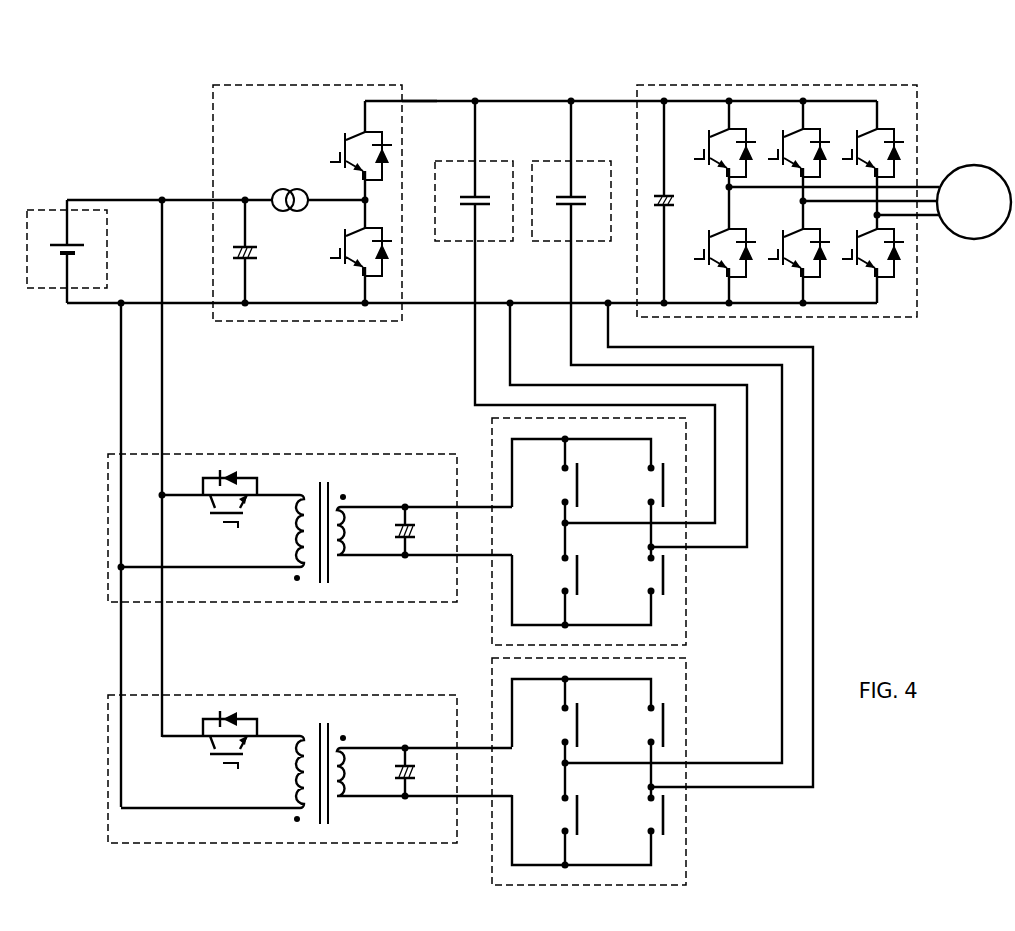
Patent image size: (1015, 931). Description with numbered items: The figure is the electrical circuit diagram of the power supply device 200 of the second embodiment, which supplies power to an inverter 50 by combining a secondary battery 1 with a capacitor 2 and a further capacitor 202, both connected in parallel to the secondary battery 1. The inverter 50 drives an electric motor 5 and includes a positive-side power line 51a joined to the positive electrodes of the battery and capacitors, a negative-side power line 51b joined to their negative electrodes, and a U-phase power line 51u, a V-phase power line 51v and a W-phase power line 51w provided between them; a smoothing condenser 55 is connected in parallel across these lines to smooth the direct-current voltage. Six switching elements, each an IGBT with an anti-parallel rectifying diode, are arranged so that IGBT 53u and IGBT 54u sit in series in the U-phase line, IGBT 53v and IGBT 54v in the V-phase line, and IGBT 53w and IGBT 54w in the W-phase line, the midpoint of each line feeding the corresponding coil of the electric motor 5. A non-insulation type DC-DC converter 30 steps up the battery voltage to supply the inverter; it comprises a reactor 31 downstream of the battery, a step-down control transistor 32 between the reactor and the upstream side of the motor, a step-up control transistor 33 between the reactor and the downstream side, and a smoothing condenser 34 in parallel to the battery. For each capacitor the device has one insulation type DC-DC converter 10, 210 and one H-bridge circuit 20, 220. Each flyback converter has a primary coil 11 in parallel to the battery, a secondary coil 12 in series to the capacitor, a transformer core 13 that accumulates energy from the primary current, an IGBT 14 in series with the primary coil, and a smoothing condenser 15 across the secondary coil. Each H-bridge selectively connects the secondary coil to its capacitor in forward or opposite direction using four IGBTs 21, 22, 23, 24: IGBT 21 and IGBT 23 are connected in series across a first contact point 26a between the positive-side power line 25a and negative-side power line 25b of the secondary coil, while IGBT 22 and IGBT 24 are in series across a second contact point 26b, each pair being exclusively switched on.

The secondary battery 1 is at (50, 208).
The capacitor 2 is at (497, 158).
The capacitor 202 is at (597, 158).
The power supply device 200 is at (608, 84).
The electric motor 5 is at (968, 165).
The insulation type DC-DC converter 10 is at (428, 451).
The insulation type DC-DC converter 210 is at (432, 692).
The primary coil 11 is at (305, 492).
The secondary coil 12 is at (352, 506).
The transformer core 13 is at (332, 573).
The IGBT 14 is at (212, 506).
The smoothing condenser 15 is at (404, 518).
The H-bridge circuit 20 is at (688, 625).
The H-bridge circuit 220 is at (688, 865).
The IGBT 21 is at (581, 485).
The IGBT 22 is at (666, 485).
The IGBT 23 is at (581, 577).
The IGBT 24 is at (666, 572).
The positive-side power line 25a is at (538, 441).
The negative-side power line 25b is at (538, 624).
The first contact point 26a is at (565, 523).
The second contact point 26b is at (650, 547).
The non-insulation type DC-DC converter 30 is at (387, 84).
The reactor 31 is at (292, 188).
The step-down control transistor 32 is at (354, 138).
The step-up control transistor 33 is at (350, 262).
The smoothing condenser 34 is at (240, 253).
The inverter 50 is at (898, 84).
The positive-side power line 51a is at (666, 100).
The negative-side power line 51b is at (678, 306).
The U-phase power line 51u is at (723, 102).
The V-phase power line 51v is at (780, 102).
The W-phase power line 51w is at (872, 120).
The IGBT 53u is at (723, 168).
The IGBT 53v is at (800, 168).
The IGBT 53w is at (872, 168).
The IGBT 54u is at (723, 258).
The IGBT 54v is at (800, 258).
The IGBT 54w is at (873, 258).
The smoothing condenser 55 is at (664, 219).